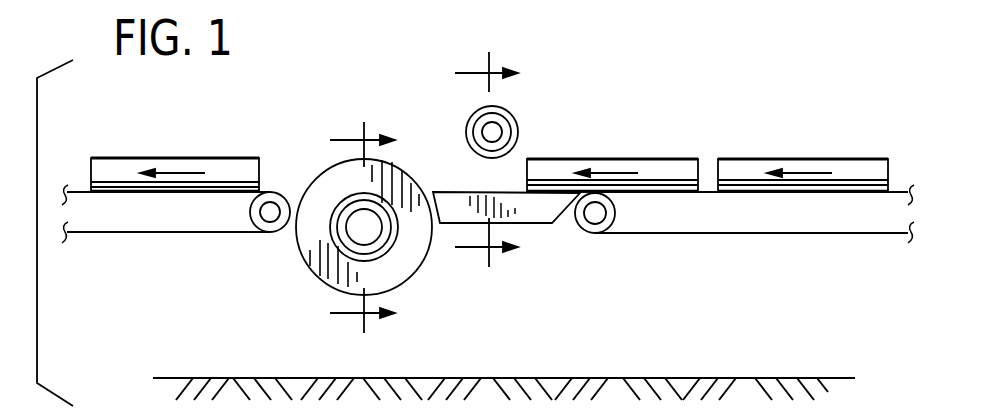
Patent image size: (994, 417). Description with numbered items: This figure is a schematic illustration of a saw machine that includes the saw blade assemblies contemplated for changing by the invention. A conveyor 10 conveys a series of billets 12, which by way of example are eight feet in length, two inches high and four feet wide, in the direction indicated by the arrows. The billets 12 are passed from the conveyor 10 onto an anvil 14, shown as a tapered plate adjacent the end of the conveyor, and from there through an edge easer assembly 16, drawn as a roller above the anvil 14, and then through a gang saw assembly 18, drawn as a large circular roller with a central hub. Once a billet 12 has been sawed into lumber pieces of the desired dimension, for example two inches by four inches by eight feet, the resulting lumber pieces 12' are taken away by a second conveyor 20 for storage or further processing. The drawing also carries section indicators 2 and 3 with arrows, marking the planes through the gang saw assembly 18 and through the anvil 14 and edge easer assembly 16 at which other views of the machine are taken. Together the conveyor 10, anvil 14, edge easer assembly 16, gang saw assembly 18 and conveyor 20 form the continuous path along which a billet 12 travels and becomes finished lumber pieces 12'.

The conveyor 10 is at (660, 235).
The billet 12 is at (707, 136).
The lumber pieces 12' is at (175, 135).
The anvil 14 is at (530, 213).
The edge easer assembly 16 is at (515, 115).
The gang saw assembly 18 is at (403, 173).
The conveyor 20 is at (168, 232).
The section line 2- 2 is at (362, 228).
The section line 3- 3 is at (486, 161).